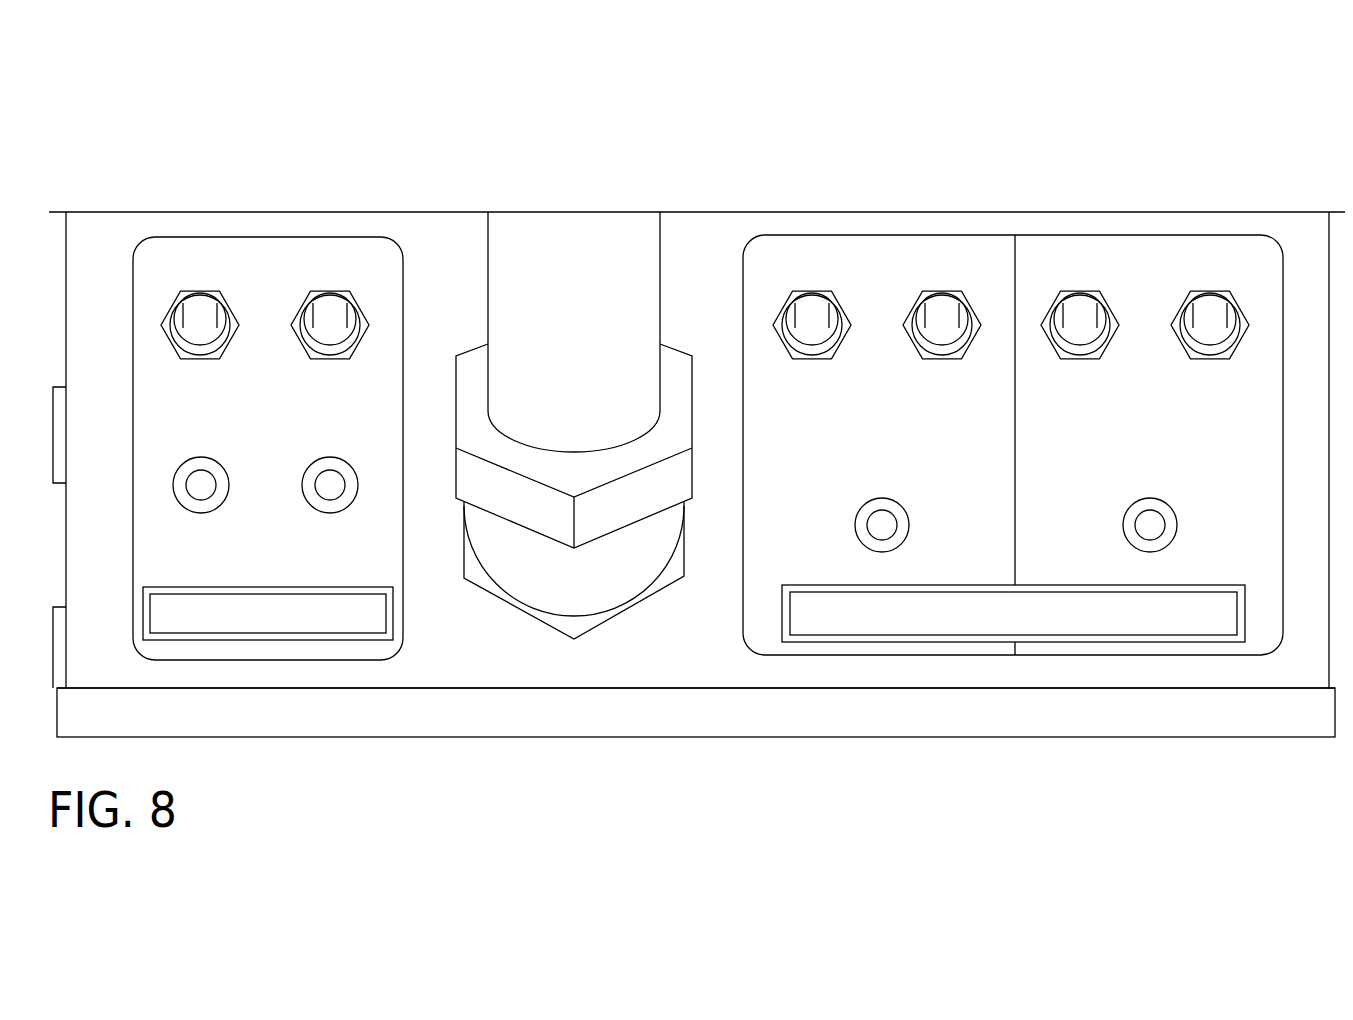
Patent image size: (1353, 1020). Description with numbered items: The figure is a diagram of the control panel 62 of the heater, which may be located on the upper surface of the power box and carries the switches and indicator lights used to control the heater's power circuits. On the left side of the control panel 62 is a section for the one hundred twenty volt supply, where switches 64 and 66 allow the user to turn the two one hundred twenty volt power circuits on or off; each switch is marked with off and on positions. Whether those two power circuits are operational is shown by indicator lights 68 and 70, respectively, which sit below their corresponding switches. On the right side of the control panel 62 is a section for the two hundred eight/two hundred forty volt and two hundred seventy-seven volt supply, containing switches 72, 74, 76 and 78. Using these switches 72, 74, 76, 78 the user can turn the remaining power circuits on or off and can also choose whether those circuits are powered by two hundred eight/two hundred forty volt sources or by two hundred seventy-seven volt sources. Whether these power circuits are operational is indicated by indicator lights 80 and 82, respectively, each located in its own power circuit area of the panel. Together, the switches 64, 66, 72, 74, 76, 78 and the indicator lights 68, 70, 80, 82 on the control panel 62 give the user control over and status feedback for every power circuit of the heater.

The control panel 62 is at (1112, 133).
The switch 64 is at (230, 313).
The switch 66 is at (361, 313).
The indicator light 68 is at (174, 484).
The indicator light 70 is at (357, 485).
The switch 72 is at (840, 310).
The switch 74 is at (970, 310).
The switch 76 is at (1108, 310).
The switch 78 is at (1238, 310).
The indicator light 80 is at (855, 527).
The indicator light 82 is at (1166, 520).